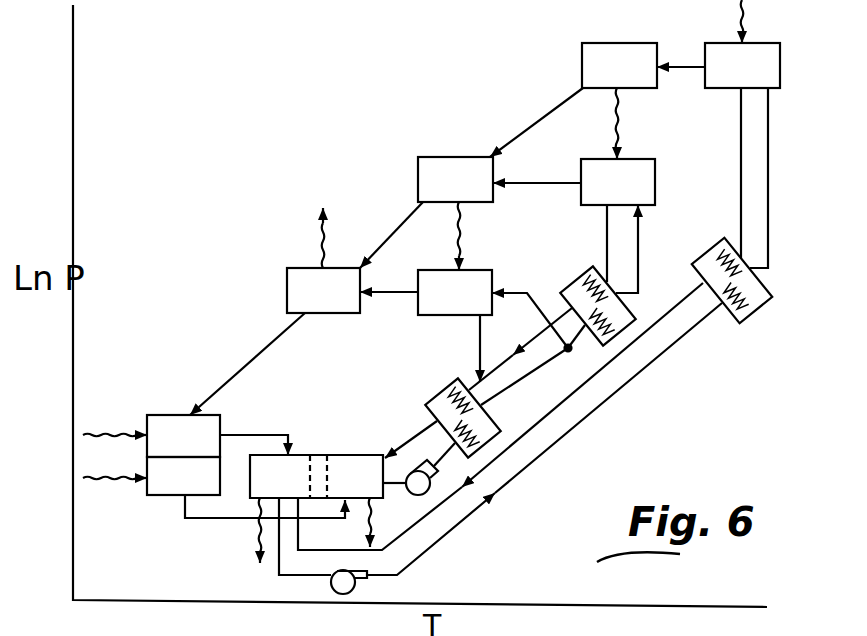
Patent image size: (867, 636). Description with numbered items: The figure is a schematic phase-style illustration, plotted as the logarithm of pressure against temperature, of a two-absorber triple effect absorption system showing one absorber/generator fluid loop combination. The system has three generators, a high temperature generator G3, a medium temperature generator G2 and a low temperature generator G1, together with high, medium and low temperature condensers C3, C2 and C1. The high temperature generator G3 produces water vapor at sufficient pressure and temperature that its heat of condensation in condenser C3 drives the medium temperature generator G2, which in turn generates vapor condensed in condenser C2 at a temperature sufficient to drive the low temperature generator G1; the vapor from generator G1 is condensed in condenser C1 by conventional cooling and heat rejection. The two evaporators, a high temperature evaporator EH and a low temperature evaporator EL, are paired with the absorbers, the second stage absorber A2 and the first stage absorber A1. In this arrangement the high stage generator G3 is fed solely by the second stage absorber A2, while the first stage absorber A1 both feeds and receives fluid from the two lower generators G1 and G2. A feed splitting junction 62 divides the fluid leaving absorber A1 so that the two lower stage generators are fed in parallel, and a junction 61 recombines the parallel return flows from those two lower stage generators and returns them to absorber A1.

The junction 61 is at (477, 383).
The feed splitting junction 62 is at (570, 351).
The low temperature condenser C1 is at (323, 290).
The medium temperature condenser C2 is at (455, 179).
The high temperature condenser C3 is at (619, 65).
The low temperature generator G1 is at (455, 292).
The medium temperature generator G2 is at (618, 182).
The high temperature generator G3 is at (742, 65).
The high temperature evaporator EH is at (183, 436).
The low temperature evaporator EL is at (183, 477).
The first stage absorber A1 is at (346, 476).
The second stage absorber A2 is at (280, 476).